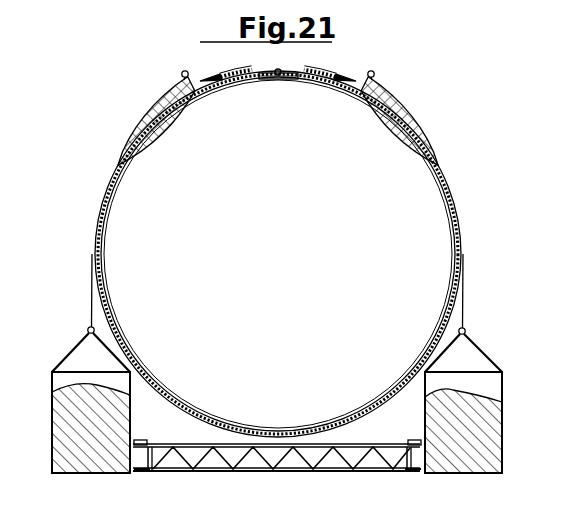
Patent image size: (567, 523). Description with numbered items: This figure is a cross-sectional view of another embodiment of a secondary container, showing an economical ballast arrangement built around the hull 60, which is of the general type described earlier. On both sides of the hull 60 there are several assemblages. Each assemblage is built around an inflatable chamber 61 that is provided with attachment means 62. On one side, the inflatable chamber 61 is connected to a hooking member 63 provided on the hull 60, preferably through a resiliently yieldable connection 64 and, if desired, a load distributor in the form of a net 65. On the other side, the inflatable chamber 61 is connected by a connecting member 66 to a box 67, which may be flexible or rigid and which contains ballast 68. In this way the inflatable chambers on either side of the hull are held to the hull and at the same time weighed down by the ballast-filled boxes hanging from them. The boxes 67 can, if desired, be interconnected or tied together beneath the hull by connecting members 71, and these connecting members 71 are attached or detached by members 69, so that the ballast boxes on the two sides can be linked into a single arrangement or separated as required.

The hull 60 is at (188, 106).
The inflatable chamber 61 is at (156, 96).
The attachment means 62 is at (183, 72).
The hooking member 63 is at (278, 70).
The resiliently yieldable connection 64 is at (238, 74).
The net 65 is at (213, 78).
The connecting member 66 is at (92, 272).
The box 67 is at (52, 384).
The ballast 68 is at (58, 421).
The attaching members 69 is at (138, 443).
The connecting member 71 is at (277, 470).